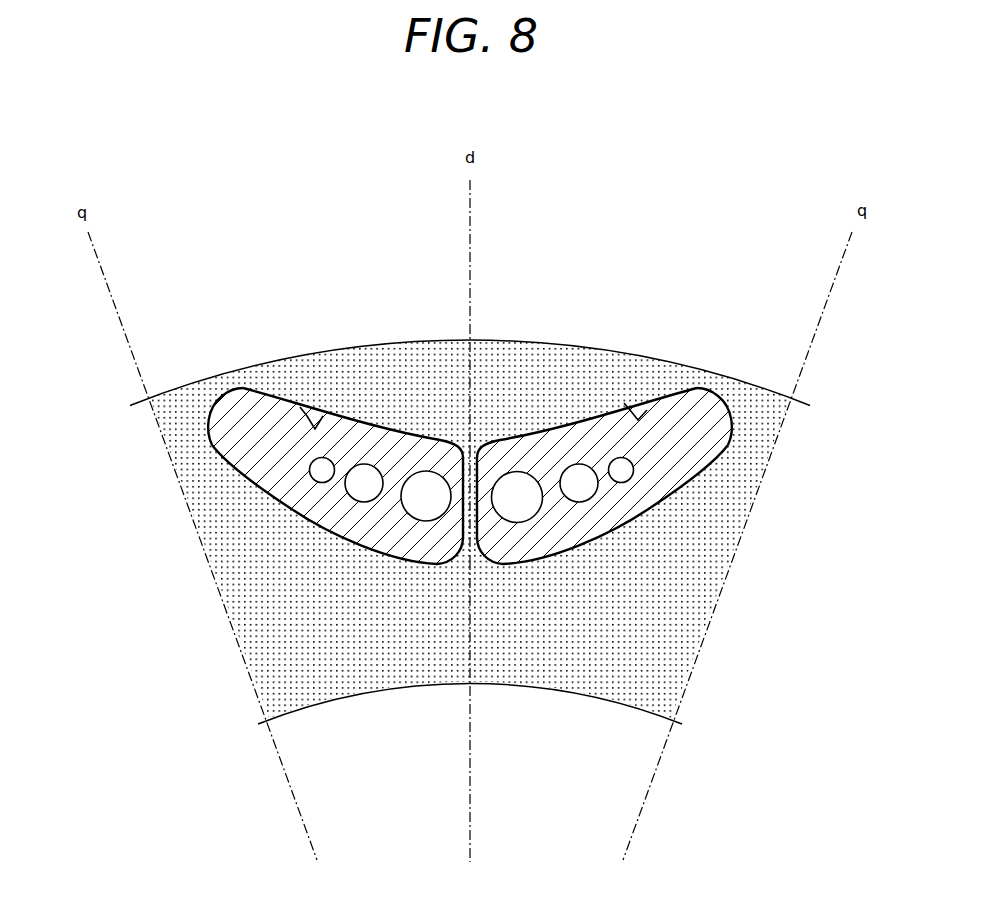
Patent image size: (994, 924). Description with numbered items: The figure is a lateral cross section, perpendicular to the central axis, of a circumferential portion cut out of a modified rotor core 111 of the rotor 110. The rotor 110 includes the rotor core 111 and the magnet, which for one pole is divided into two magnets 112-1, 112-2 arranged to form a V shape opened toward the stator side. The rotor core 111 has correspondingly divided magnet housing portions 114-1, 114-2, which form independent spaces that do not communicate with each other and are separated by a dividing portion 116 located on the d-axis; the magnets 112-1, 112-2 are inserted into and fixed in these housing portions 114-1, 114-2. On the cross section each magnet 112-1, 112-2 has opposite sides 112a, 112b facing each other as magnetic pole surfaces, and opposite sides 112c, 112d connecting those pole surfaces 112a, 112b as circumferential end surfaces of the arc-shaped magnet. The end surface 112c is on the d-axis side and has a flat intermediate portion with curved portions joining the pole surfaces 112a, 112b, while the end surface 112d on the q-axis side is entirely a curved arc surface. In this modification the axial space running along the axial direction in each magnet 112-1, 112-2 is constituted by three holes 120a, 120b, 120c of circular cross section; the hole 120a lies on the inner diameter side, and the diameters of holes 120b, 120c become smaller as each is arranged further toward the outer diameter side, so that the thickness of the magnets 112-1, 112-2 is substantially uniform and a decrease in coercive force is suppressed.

The rotor 110 is at (160, 396).
The rotor core 111 is at (740, 382).
The magnet 112-1 is at (392, 440).
The magnet 112-2 is at (550, 445).
The magnetic pole surface 112a is at (263, 387).
The magnetic pole surface 112b is at (306, 516).
The end surface 112c is at (460, 520).
The end surface 112d is at (220, 394).
The magnet housing portion 114-1 is at (300, 407).
The magnet housing portion 114-2 is at (647, 410).
The dividing portion 116 is at (468, 528).
The hole 120a is at (431, 470).
The hole 120b is at (363, 464).
The hole 120c is at (310, 467).